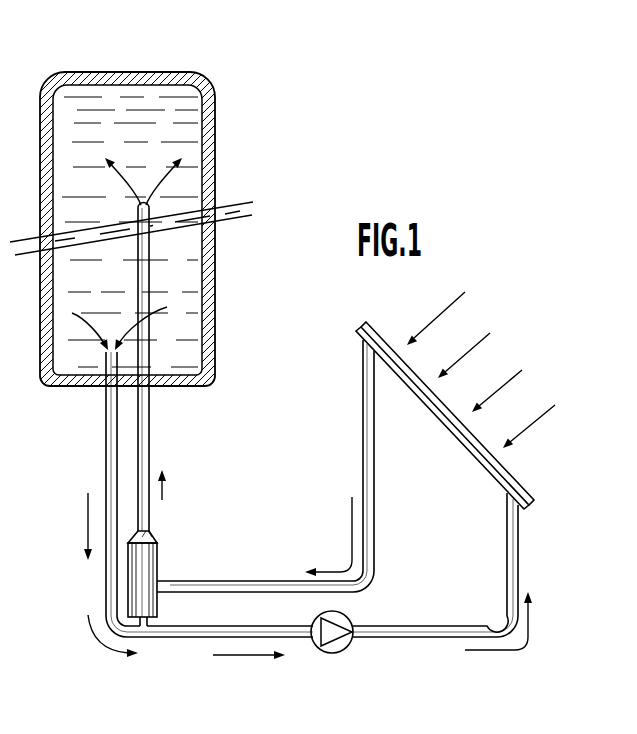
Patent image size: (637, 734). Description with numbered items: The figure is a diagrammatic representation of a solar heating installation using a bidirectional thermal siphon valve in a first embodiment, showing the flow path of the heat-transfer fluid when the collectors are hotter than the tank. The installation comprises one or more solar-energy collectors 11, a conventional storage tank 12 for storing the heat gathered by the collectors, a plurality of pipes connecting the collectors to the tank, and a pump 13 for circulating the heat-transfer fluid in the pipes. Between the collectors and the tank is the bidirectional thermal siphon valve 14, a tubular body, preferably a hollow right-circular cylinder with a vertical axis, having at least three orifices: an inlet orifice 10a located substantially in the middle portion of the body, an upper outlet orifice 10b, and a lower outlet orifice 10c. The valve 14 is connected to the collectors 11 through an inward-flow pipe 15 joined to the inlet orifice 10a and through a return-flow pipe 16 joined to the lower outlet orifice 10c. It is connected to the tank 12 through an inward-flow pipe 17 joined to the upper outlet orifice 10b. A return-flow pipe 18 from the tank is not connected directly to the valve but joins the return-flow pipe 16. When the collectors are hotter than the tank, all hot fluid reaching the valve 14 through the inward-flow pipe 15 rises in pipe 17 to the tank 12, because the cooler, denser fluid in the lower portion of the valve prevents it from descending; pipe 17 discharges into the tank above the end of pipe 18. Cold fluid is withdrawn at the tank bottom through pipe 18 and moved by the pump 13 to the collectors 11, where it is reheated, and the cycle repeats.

The solar-energy collector 11 is at (521, 482).
The storage tank 12 is at (214, 153).
The pump 13 is at (342, 645).
The bidirectional thermal siphon valve 14 is at (177, 596).
The inward-flow pipe 15 is at (242, 582).
The return-flow pipe 16 is at (518, 570).
The inward-flow pipe 17 is at (150, 442).
The return-flow pipe 18 is at (107, 457).
The inlet orifice 10a is at (158, 588).
The upper outlet orifice 10b is at (148, 527).
The lower outlet orifice 10c is at (142, 618).